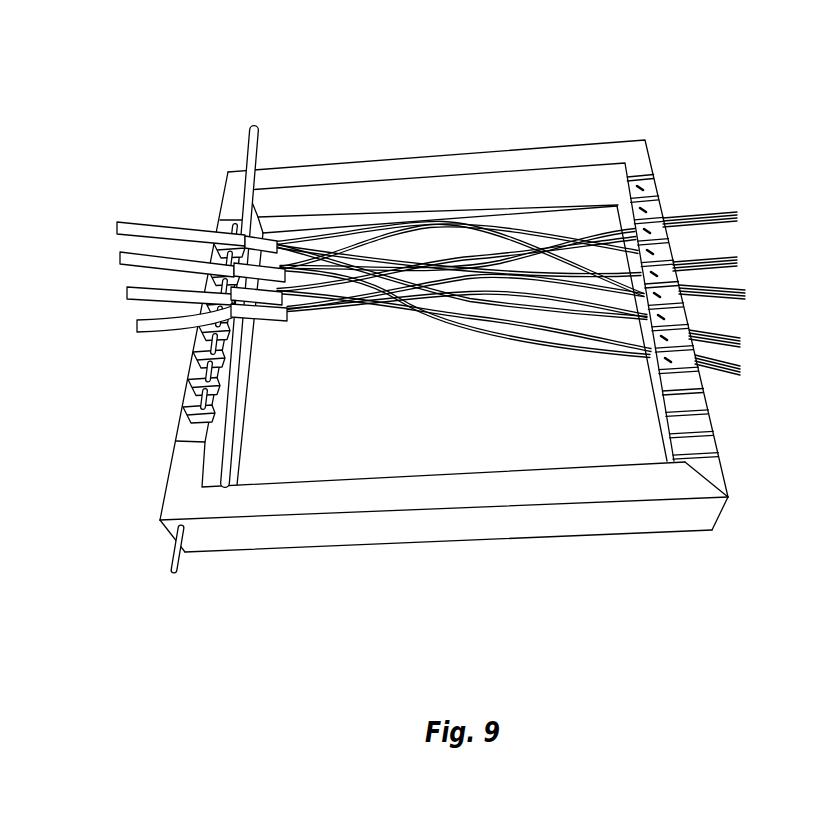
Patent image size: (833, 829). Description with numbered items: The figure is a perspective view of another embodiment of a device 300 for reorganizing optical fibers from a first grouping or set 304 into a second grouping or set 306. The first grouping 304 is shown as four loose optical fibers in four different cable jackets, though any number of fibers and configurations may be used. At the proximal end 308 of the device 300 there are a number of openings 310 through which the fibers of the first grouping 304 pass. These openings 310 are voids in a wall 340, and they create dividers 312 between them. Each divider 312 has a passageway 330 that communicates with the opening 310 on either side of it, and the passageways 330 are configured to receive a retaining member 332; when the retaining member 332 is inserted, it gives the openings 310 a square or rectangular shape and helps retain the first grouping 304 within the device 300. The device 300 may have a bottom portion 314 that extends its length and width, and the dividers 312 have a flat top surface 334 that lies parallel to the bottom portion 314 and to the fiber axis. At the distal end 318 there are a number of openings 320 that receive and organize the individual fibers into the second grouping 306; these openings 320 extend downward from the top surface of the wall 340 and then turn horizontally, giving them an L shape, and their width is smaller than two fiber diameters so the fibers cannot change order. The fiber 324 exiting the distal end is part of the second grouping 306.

The device 300 is at (558, 90).
The first grouping or set 304 is at (140, 318).
The second grouping or set 306 is at (704, 216).
The proximal end 308 is at (160, 539).
The openings 310 is at (214, 437).
The dividers 312 is at (216, 418).
The bottom portion 314 is at (494, 404).
The distal end 318 is at (733, 507).
The openings 320 is at (705, 420).
The optical fiber 324 is at (666, 272).
The passageways 330 is at (186, 418).
The retaining member 332 is at (182, 565).
The top surface 334 is at (618, 490).
The wall 340 is at (180, 460).